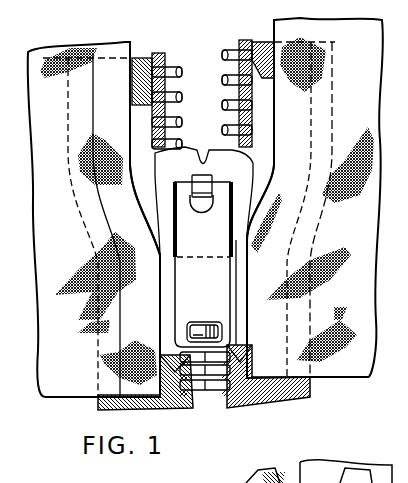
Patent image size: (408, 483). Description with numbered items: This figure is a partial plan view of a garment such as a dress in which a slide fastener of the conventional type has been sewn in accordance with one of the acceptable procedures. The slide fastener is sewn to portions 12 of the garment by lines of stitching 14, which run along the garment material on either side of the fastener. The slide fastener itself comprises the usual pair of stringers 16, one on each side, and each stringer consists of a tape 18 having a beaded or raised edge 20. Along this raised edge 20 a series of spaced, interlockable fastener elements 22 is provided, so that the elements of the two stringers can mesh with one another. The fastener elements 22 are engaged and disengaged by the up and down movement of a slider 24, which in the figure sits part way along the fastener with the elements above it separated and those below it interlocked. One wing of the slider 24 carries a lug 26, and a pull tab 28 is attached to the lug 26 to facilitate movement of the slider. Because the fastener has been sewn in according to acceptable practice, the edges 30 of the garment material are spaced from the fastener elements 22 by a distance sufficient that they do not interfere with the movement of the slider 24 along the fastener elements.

The portions of a garment 12 is at (62, 390).
The lines of stitching 14 is at (120, 354).
The stringers 16 is at (122, 404).
The tape 18 is at (147, 58).
The beaded or raised edge 20 is at (202, 215).
The fastener elements 22 is at (178, 96).
The slider 24 is at (240, 183).
The lug 26 is at (193, 177).
The pull tab 28 is at (222, 288).
The edges 30 is at (138, 201).